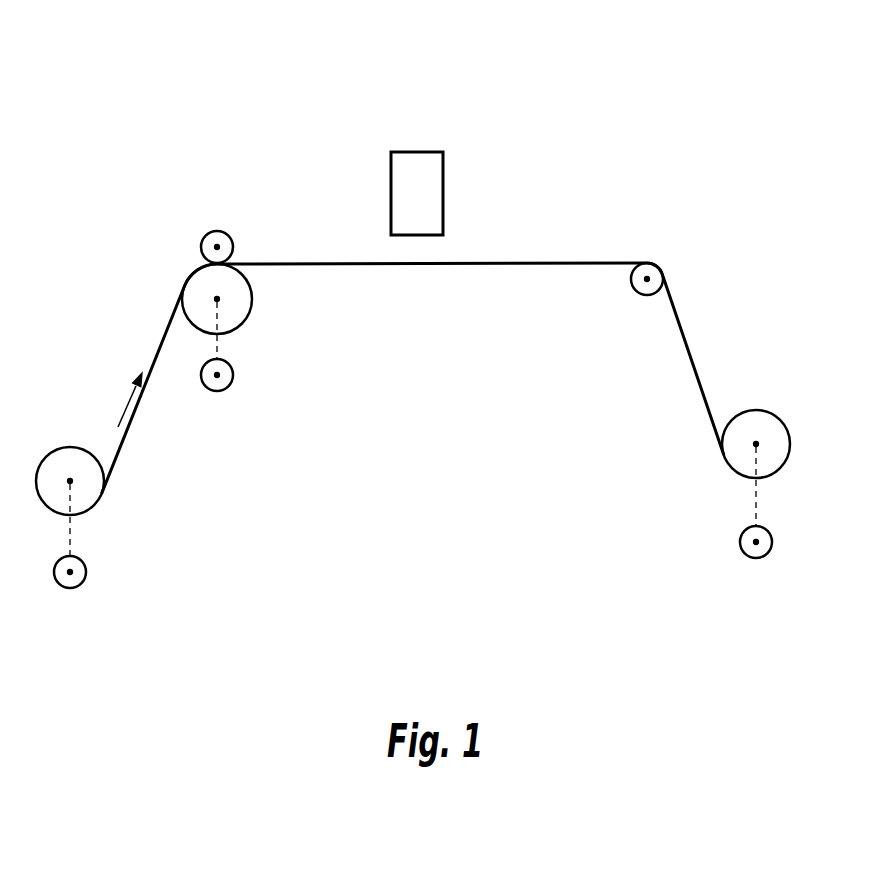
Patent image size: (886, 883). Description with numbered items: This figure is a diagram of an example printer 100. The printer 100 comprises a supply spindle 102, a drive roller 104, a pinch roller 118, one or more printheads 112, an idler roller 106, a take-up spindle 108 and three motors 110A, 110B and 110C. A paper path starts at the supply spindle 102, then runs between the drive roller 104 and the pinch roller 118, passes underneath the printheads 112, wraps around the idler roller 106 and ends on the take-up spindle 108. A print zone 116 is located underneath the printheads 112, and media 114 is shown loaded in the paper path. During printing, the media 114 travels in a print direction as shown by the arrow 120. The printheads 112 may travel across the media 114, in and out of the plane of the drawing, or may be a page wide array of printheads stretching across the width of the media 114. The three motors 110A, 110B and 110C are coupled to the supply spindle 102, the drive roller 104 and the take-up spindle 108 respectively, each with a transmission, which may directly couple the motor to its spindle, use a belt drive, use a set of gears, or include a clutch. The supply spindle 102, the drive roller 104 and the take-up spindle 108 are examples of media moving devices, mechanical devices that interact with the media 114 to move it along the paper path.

The printer 100 is at (204, 70).
The supply spindle 102 is at (66, 446).
The drive roller 104 is at (253, 293).
The idler roller 106 is at (635, 293).
The take-up spindle 108 is at (775, 410).
The motor 110A is at (233, 368).
The motor 110B is at (87, 570).
The motor 110C is at (740, 542).
The printheads 112 is at (444, 172).
The media 114 is at (537, 263).
The print zone 116 is at (395, 250).
The pinch roller 118 is at (205, 235).
The arrow 120 is at (123, 412).